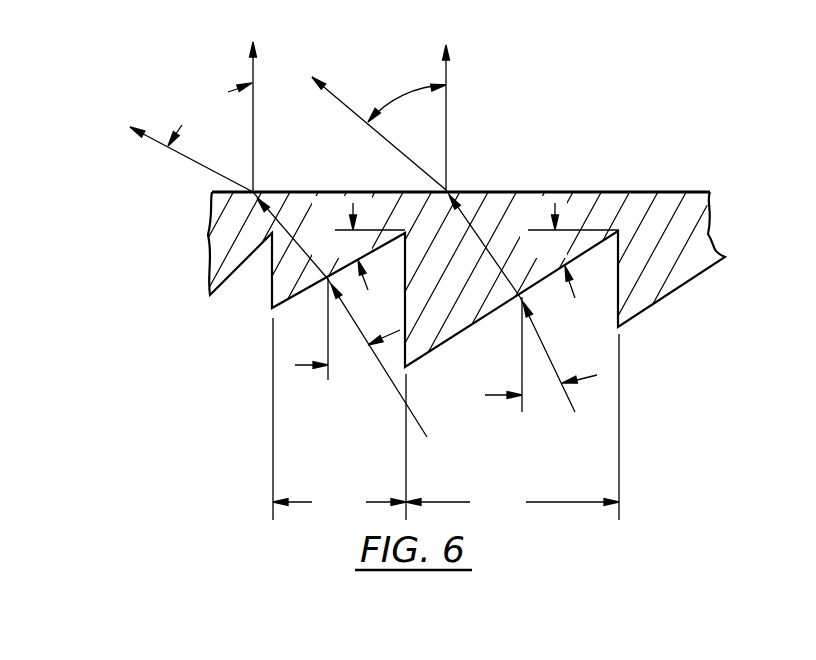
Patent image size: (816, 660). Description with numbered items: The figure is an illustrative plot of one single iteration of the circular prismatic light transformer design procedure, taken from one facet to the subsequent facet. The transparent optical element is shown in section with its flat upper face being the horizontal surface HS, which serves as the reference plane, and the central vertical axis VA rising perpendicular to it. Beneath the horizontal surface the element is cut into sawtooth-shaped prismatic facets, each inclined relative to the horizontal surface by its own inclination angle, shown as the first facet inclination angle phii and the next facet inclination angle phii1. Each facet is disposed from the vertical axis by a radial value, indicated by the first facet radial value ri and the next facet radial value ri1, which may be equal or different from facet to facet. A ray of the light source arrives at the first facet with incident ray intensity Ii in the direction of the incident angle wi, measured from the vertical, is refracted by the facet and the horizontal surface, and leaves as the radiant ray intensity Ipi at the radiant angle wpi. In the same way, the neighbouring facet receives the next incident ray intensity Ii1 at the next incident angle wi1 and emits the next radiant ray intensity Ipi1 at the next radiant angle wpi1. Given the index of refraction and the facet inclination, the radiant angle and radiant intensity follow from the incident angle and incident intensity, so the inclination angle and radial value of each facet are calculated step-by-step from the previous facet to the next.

The horizontal surface HS is at (420, 265).
The vertical axis VA is at (446, 107).
The radiant ray intensity I'i Ipi is at (430, 229).
The incident ray intensity Ii is at (570, 435).
The radiant ray intensity I'i+1 Ipi1 is at (247, 269).
The incident ray intensity Ii+1 Ii1 is at (435, 450).
The radiant angle ω'i wpi is at (401, 100).
The radiant angle ω'i+1 wpi1 is at (203, 114).
The inclination angle φi phii is at (573, 250).
The inclination angle φi+1 phii1 is at (360, 246).
The incident angle ωi wi is at (541, 359).
The incident angle ωi+1 wi1 is at (347, 332).
The radial value ri is at (512, 427).
The radial value ri+1 ri1 is at (339, 419).